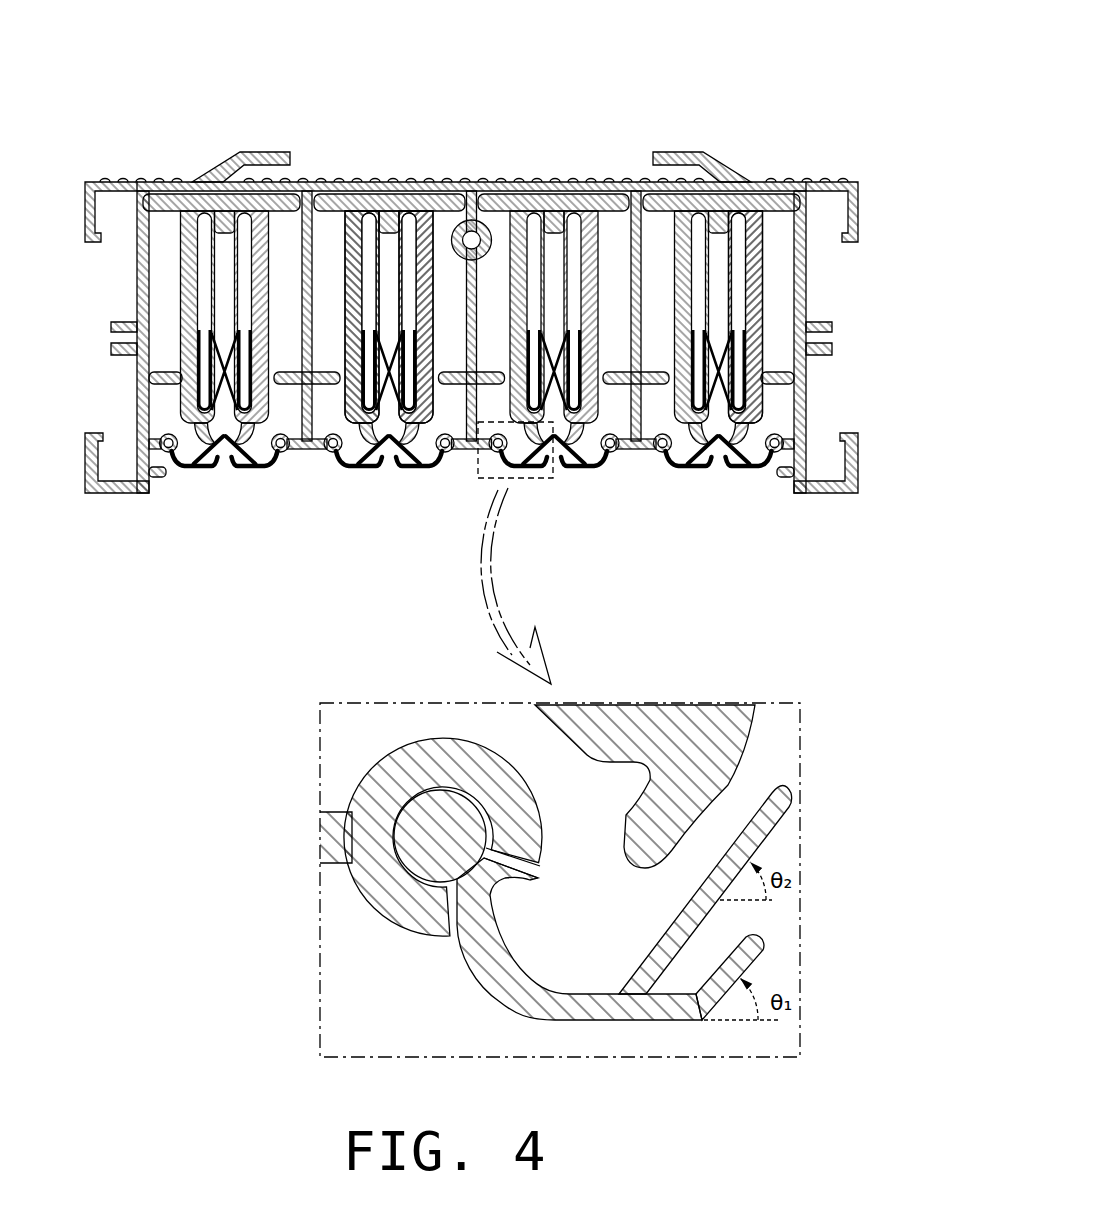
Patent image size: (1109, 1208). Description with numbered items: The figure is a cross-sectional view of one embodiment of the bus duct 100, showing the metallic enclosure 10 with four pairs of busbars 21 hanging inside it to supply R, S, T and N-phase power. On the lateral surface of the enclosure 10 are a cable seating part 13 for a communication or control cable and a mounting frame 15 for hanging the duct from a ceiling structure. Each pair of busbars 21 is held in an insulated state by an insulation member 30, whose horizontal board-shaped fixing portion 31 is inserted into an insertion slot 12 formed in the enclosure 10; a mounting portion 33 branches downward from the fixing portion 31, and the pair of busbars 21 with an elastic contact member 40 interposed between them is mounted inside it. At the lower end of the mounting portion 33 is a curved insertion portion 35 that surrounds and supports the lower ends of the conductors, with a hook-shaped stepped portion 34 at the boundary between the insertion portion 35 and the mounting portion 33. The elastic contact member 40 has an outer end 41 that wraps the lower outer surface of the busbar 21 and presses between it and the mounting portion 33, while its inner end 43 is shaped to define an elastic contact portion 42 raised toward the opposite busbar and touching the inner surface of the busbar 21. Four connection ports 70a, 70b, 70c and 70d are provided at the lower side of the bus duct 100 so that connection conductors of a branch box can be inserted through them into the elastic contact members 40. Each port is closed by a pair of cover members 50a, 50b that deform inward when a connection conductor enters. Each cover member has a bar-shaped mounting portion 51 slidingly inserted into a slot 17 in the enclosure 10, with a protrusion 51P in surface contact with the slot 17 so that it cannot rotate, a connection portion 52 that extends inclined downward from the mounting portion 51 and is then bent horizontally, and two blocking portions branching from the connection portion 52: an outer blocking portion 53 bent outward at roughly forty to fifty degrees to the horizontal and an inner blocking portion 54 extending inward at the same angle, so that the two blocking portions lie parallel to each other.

The bus duct 100 is at (708, 110).
The enclosure 10 is at (172, 176).
The insertion slot 12 is at (160, 240).
The cable seating part 13 is at (116, 322).
The mounting frame 15 is at (275, 153).
The slot 17 is at (410, 760).
The busbar 21 is at (740, 295).
The insulation member 30 is at (602, 280).
The fixing portion 31 is at (783, 195).
The mounting portion 33 is at (757, 253).
The hook-shaped stepped portion 34 is at (698, 452).
The insertion portion 35 is at (722, 452).
The elastic contact member 40 is at (385, 343).
The outer end 41 is at (418, 330).
The elastic contact portion 42 is at (474, 238).
The inner end 43 is at (372, 345).
The cover member 50a is at (160, 443).
The cover member 50b is at (286, 480).
The mounting portion 51 is at (433, 842).
The protrusion 51P is at (530, 875).
The connection portion 52 is at (582, 1020).
The outer blocking portion 53 is at (758, 975).
The inner blocking portion 54 is at (762, 825).
The connection port 70a is at (195, 380).
The connection port 70b is at (410, 470).
The connection port 70c is at (580, 470).
The connection port 70d is at (728, 392).